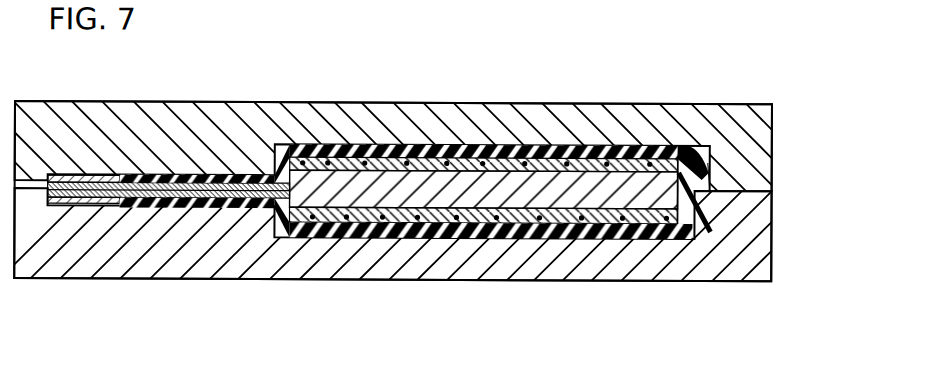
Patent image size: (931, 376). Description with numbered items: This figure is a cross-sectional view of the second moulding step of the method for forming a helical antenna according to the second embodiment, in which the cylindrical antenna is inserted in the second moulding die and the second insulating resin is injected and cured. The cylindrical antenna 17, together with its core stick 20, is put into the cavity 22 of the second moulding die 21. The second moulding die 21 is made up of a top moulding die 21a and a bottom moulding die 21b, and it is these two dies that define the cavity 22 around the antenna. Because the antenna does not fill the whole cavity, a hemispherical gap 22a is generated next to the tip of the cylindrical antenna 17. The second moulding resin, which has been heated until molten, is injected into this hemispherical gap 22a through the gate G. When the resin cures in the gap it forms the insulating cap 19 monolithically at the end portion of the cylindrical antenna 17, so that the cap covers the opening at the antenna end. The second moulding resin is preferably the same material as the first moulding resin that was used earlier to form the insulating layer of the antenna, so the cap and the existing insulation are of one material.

The cylindrical antenna 17 is at (517, 158).
The insulating cap 19 is at (685, 223).
The core stick 20 is at (600, 221).
The second moulding die 21 is at (848, 160).
The top moulding die 21a is at (755, 165).
The bottom moulding die 21b is at (755, 247).
The cavity 22 is at (386, 140).
The hemispherical gap 22a is at (697, 145).
The gate G is at (712, 177).